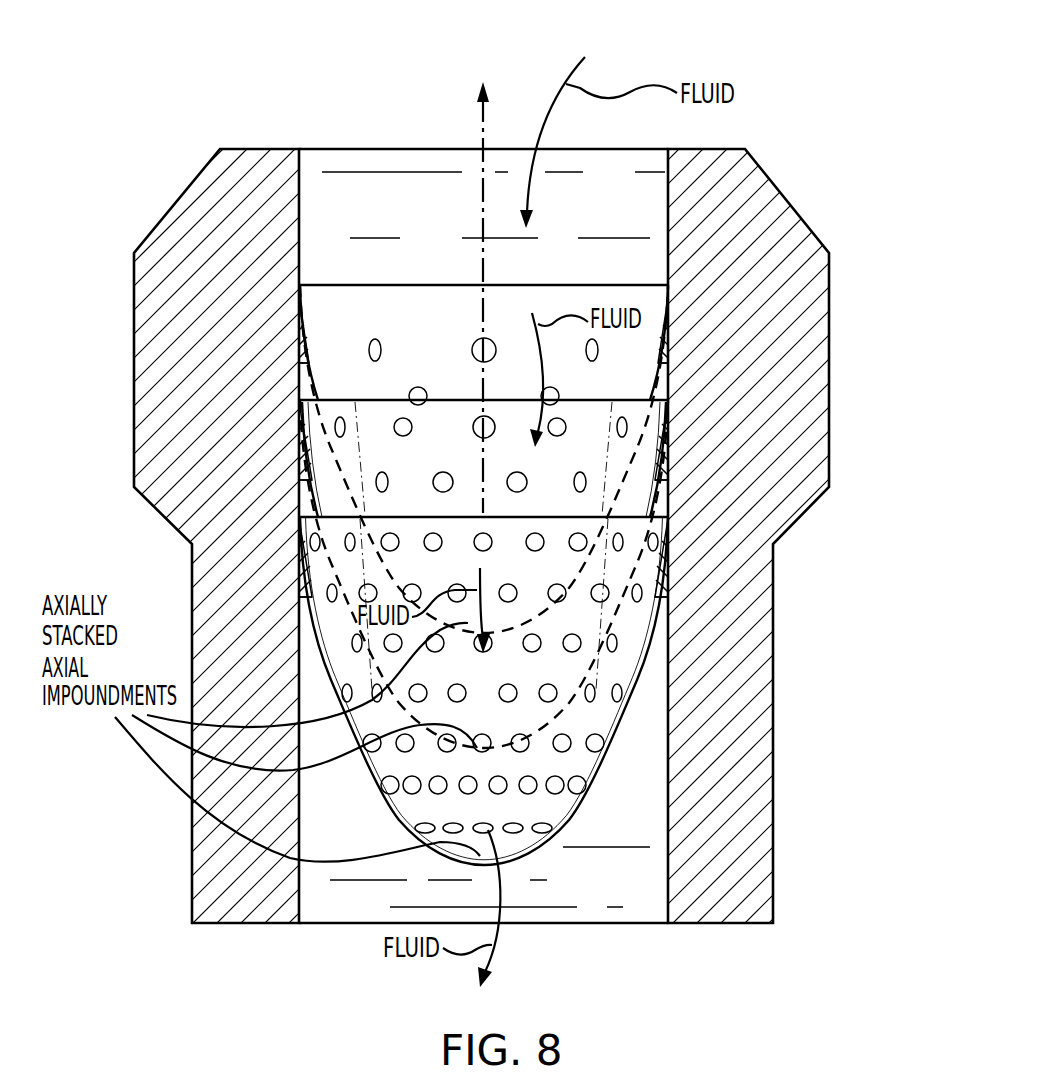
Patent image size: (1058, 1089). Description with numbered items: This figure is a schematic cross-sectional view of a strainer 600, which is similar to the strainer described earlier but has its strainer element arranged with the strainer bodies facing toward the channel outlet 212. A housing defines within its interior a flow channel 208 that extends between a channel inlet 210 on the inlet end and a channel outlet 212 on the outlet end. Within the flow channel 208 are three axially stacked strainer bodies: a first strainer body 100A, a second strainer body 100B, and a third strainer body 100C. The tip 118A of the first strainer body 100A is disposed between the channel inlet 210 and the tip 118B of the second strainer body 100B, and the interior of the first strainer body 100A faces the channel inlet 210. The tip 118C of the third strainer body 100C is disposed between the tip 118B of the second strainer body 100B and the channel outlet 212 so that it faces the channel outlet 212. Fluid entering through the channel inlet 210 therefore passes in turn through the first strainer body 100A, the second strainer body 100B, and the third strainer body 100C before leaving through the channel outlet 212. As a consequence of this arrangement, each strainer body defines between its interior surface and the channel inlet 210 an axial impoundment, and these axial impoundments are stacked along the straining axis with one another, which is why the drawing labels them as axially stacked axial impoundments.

The strainer 600 is at (212, 968).
The channel inlet 210 is at (632, 187).
The flow channel 208 is at (557, 277).
The channel outlet 212 is at (632, 893).
The first strainer body 100A is at (632, 357).
The second strainer body 100B is at (613, 472).
The third strainer body 100C is at (545, 808).
The tip of first strainer body 118A is at (487, 632).
The tip of second strainer body 118B is at (487, 747).
The tip of third strainer body 118C is at (482, 866).